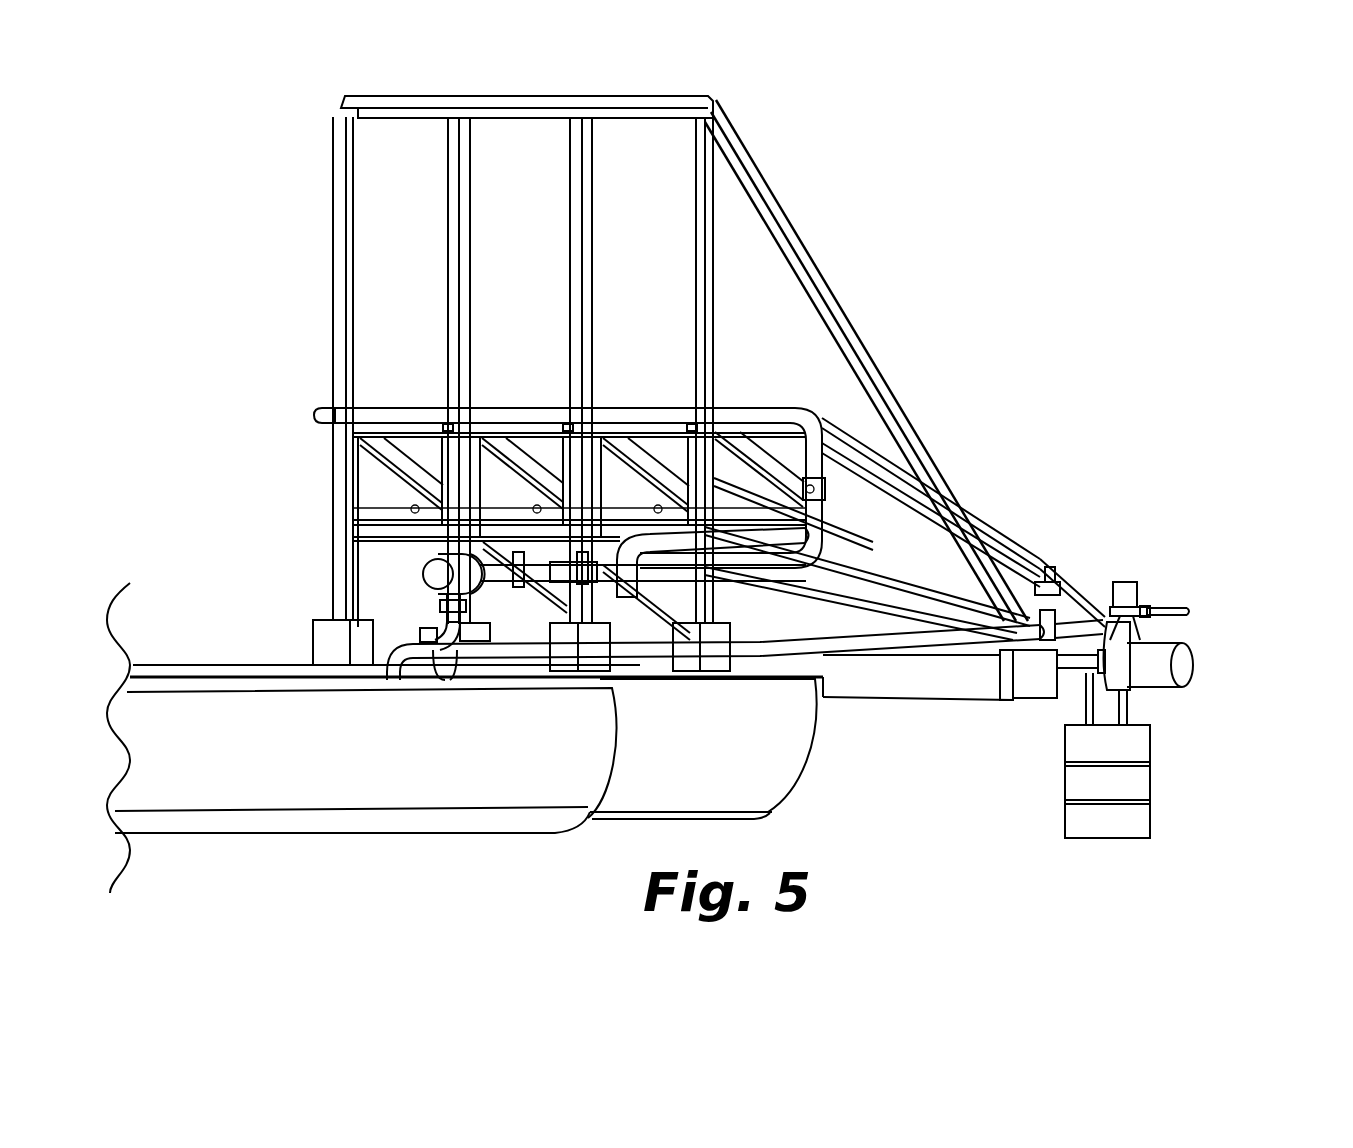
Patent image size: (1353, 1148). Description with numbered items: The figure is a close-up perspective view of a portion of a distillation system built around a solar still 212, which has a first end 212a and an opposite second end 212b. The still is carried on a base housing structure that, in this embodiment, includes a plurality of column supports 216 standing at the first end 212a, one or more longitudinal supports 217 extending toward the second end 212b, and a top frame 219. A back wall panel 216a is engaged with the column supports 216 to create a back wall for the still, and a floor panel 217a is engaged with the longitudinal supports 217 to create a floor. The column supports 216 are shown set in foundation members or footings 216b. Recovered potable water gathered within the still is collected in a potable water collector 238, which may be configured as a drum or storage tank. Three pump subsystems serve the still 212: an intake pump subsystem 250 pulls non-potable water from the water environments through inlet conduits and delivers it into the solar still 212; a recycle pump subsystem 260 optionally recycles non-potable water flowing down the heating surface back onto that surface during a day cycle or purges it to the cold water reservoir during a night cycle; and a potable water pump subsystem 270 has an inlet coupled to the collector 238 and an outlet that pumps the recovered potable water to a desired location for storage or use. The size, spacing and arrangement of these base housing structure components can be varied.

The solar still 212 is at (935, 165).
The first end 212a is at (275, 158).
The second end 212b is at (1210, 580).
The column supports 216 is at (330, 432).
The back wall panel 216a is at (372, 228).
The footings 216b is at (312, 625).
The longitudinal supports 217 is at (857, 520).
The floor panel 217a is at (878, 590).
The top frame 219 is at (796, 240).
The potable water collector 238 is at (1150, 800).
The intake pump subsystem 250 is at (422, 577).
The recycle pump subsystem 260 is at (1210, 690).
The potable water pump subsystem 270 is at (1138, 552).